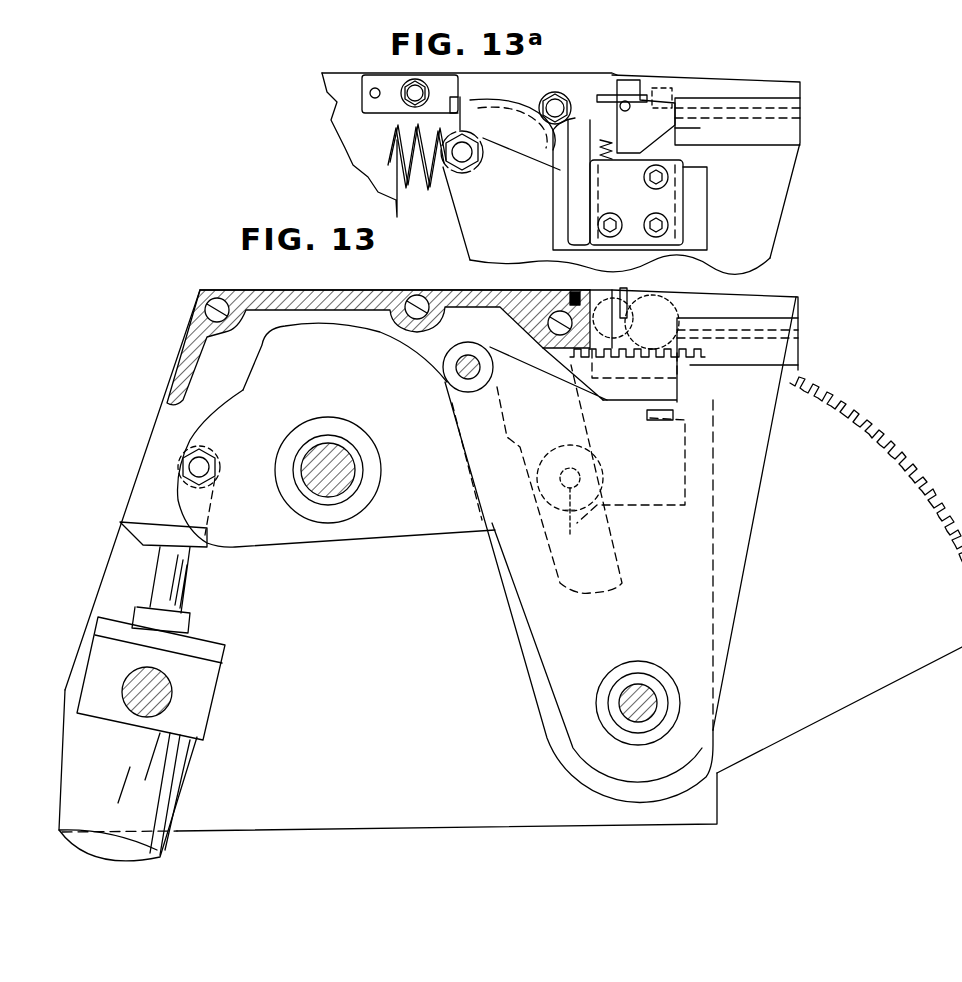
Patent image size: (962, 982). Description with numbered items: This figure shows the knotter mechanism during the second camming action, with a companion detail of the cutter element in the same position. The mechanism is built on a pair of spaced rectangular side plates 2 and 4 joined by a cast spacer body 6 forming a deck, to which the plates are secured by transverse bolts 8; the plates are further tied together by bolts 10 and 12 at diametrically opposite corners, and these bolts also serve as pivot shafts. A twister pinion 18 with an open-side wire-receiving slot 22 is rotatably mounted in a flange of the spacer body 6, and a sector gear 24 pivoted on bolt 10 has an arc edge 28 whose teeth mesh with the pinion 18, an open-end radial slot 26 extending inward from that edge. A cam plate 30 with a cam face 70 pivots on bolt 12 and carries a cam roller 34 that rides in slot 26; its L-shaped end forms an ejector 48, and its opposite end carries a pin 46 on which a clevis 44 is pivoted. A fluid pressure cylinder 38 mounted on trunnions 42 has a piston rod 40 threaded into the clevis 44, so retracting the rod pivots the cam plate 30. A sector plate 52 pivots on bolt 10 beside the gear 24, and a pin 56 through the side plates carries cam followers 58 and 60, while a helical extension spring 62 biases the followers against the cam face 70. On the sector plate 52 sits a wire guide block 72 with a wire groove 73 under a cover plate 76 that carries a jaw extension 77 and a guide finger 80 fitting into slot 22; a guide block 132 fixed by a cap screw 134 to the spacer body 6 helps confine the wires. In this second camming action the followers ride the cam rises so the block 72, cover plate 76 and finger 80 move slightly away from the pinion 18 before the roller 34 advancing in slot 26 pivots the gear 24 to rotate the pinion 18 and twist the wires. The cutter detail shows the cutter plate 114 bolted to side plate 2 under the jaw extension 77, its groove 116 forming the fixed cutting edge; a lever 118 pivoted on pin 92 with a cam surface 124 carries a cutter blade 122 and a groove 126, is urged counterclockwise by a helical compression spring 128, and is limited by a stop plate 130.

In FIG. 13A, the side plate 2 is at (328, 118).
In FIG. 13, the side plate 4 is at (160, 437).
In FIG. 13, the cast spacer body 6 is at (312, 290).
In FIG. 13, the bolt 8 is at (208, 308).
In FIG. 13, the bolt 10 is at (640, 690).
In FIG. 13, the bolt 12 is at (340, 455).
In FIG. 13, the twister pinion 18 is at (657, 308).
In FIG. 13, the wire-receiving slot 22 is at (618, 295).
In FIG. 13, the sector gear 24 is at (837, 535).
In FIG. 13, the radial slot 26 is at (622, 548).
In FIG. 13, the arc edge 28 is at (856, 420).
In FIG. 13, the cam plate 30 is at (408, 528).
In FIG. 13, the cam roller 34 is at (572, 522).
In FIG. 13, the fluid pressure cylinder 38 is at (180, 781).
In FIG. 13, the piston rod 40 is at (185, 585).
In FIG. 13, the trunnion 42 is at (175, 694).
In FIG. 13, the clevis 44 is at (137, 527).
In FIG. 13, the pin 46 is at (215, 467).
In FIG. 13, the ejector 48 is at (690, 420).
In FIG. 13A, the sector plate 52 is at (466, 232).
In FIG. 13A, the pin 56 is at (456, 166).
In FIG. 13, the pin 56 is at (492, 366).
In FIG. 13, the cam follower 58 is at (443, 367).
In FIG. 13A, the cam follower 60 is at (484, 172).
In FIG. 13A, the helical extension spring 62 is at (395, 146).
In FIG. 13, the cam face 70 is at (404, 346).
In FIG. 13A, the wire guide block 72 is at (760, 140).
In FIG. 13, the wire guide block 72 is at (752, 360).
In FIG. 13A, the wire groove 73 is at (660, 103).
In FIG. 13, the wire groove 73 is at (649, 370).
In FIG. 13A, the cover plate 76 is at (745, 82).
In FIG. 13, the cover plate 76 is at (760, 297).
In FIG. 13A, the jaw extension 77 is at (622, 98).
In FIG. 13A, the guide finger 80 is at (700, 110).
In FIG. 13, the guide finger 80 is at (720, 330).
In FIG. 13, the pin 92 is at (536, 330).
In FIG. 13A, the cutter plate 114 is at (700, 148).
In FIG. 13A, the groove 116 is at (640, 110).
In FIG. 13A, the lever 118 is at (577, 73).
In FIG. 13A, the cutter blade 122 is at (624, 94).
In FIG. 13A, the cam surface 124 is at (500, 142).
In FIG. 13A, the groove 126 is at (612, 130).
In FIG. 13A, the helical compression spring 128 is at (605, 160).
In FIG. 13A, the stop plate 130 is at (458, 96).
In FIG. 13, the guide block 132 is at (637, 364).
In FIG. 13, the cap screw 134 is at (572, 294).